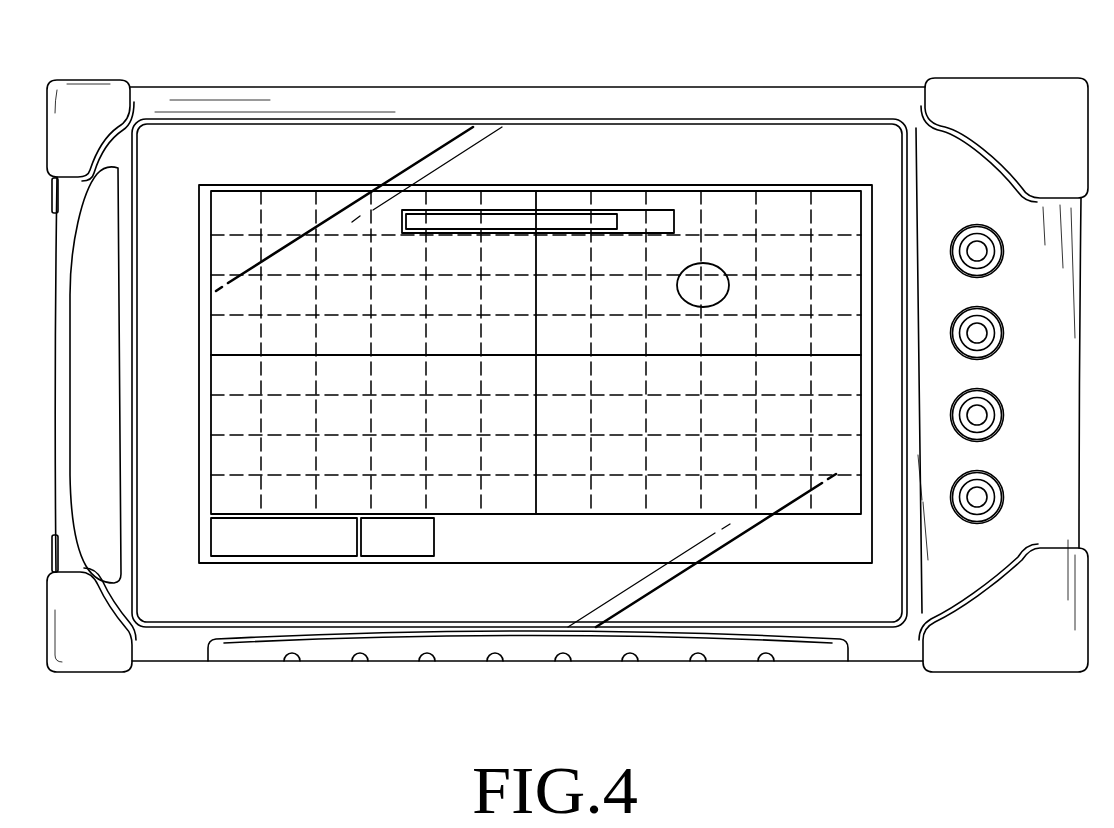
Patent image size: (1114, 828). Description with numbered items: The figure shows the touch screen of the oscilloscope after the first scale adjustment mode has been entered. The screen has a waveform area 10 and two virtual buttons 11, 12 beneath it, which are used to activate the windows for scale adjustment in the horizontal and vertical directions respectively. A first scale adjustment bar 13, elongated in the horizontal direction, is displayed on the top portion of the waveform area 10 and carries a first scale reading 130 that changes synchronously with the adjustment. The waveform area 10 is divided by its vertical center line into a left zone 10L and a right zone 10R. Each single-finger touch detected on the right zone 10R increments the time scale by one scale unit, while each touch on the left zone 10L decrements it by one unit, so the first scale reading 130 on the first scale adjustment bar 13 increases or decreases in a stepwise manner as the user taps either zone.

The waveform area 10 is at (683, 195).
The left zone 10L is at (292, 212).
The right zone 10R is at (785, 207).
The virtual button 11 is at (405, 545).
The virtual button 12 is at (262, 547).
The first scale adjustment bar 13 is at (570, 210).
The first scale reading 130 is at (455, 218).